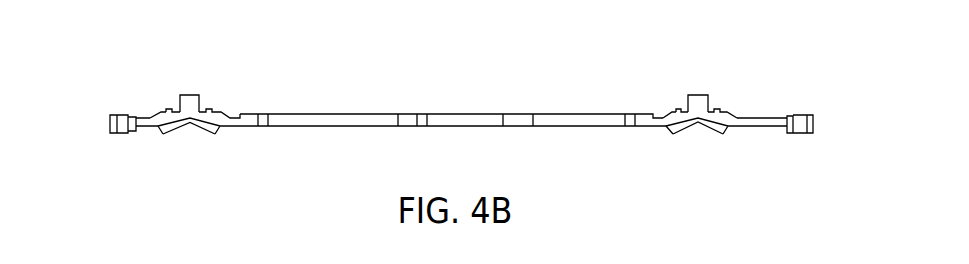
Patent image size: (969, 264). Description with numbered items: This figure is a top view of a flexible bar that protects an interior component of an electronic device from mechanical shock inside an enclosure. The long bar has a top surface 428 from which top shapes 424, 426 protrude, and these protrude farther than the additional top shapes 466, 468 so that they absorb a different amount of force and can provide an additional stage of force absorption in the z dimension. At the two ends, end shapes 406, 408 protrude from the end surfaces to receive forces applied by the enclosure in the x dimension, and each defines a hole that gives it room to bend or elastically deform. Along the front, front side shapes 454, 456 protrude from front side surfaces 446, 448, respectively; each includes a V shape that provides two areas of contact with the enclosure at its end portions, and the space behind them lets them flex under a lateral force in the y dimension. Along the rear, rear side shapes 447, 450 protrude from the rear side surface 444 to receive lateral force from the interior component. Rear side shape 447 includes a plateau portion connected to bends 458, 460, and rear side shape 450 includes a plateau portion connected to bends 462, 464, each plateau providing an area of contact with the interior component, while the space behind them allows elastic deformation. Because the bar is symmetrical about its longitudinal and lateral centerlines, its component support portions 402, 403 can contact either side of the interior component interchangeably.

The component support portion 402 is at (702, 95).
The component support portion 403 is at (189, 95).
The end shape 406 is at (812, 134).
The end shape 408 is at (110, 127).
The top shape 424 is at (422, 120).
The top shape 426 is at (512, 120).
The top surface 428 is at (468, 120).
The rear side surface 444 is at (367, 115).
The front side surface 446 is at (727, 127).
The rear side shape 447 is at (173, 108).
The front side surface 448 is at (217, 130).
The rear side shape 450 is at (681, 110).
The front side shape 454 is at (685, 134).
The front side shape 456 is at (210, 134).
The bend 458 is at (725, 116).
The bend 460 is at (668, 113).
The bend 462 is at (220, 116).
The bend 464 is at (161, 112).
The additional top shape 466 is at (266, 120).
The additional top shape 468 is at (627, 126).